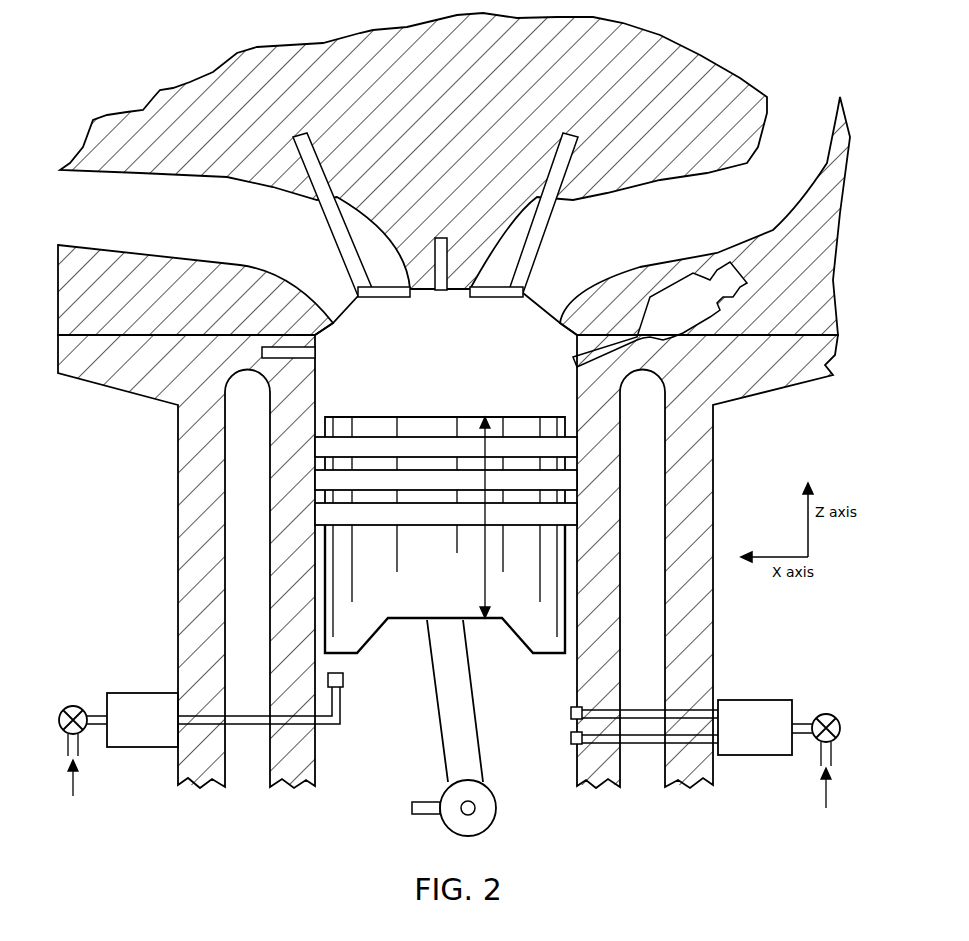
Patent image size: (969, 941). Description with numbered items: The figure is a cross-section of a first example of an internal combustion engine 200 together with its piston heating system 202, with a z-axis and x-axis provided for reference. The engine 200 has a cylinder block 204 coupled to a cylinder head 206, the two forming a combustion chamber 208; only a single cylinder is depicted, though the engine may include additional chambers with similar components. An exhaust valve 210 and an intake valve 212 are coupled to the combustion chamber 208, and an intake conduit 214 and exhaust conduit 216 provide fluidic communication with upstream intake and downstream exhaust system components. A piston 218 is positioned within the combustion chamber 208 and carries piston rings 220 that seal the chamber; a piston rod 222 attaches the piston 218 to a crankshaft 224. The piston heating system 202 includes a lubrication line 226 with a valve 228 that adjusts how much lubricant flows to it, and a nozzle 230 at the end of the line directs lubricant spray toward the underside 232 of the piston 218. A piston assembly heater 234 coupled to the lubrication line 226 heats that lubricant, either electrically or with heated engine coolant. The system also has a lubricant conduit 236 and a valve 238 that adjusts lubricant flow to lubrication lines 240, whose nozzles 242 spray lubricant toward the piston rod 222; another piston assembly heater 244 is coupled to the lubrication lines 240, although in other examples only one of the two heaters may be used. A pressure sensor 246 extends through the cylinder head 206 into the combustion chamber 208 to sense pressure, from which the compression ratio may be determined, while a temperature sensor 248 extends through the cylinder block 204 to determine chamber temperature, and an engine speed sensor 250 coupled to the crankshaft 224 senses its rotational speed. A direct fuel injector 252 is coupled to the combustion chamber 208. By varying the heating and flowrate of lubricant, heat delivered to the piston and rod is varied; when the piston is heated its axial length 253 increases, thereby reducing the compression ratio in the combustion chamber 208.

The internal combustion engine 200 is at (130, 72).
The piston heating system 202 is at (745, 788).
The cylinder block 204 is at (155, 376).
The cylinder head 206 is at (172, 309).
The combustion chamber 208 is at (428, 369).
The exhaust valve 210 is at (541, 246).
The intake valve 212 is at (335, 245).
The intake conduit 214 is at (217, 229).
The exhaust conduit 216 is at (645, 231).
The piston 218 is at (428, 587).
The piston rings 220 is at (405, 527).
The piston rod 222 is at (437, 712).
The crankshaft 224 is at (497, 806).
The lubrication line 226 is at (322, 727).
The valve 228 is at (75, 706).
The nozzle 230 is at (343, 682).
The underside of the piston 232 is at (496, 645).
The piston assembly heater 234 is at (115, 693).
The lubricant conduit 236 is at (816, 748).
The valve 238 is at (826, 714).
The lubrication lines 240 is at (627, 710).
The nozzles 242 is at (571, 713).
The piston assembly heater 244 is at (752, 700).
The pressure sensor 246 is at (441, 236).
The temperature sensor 248 is at (262, 353).
The engine speed sensor 250 is at (412, 808).
The direct fuel injector 252 is at (662, 317).
The axial length of the piston 253 is at (487, 582).